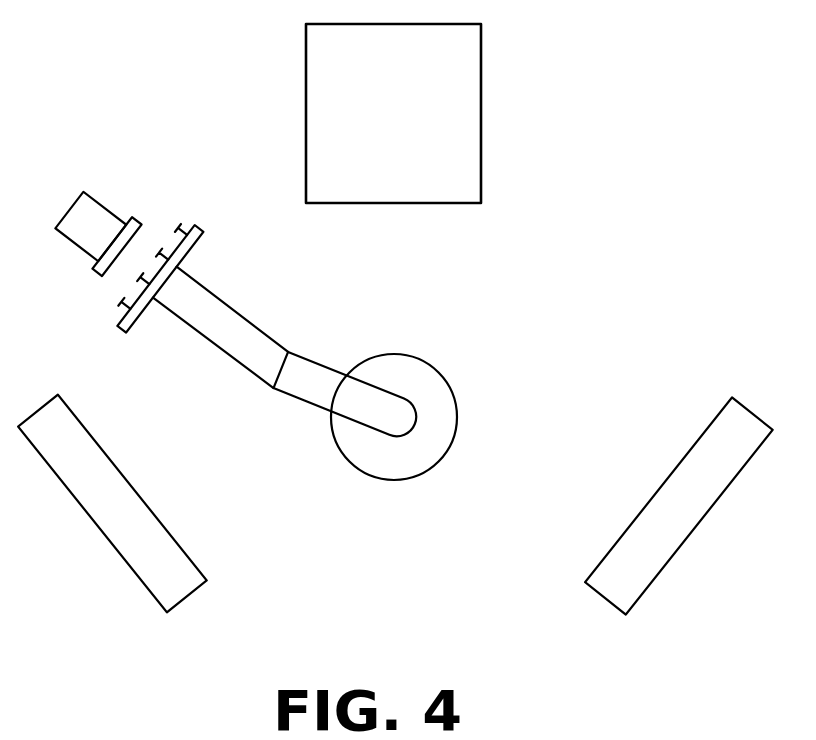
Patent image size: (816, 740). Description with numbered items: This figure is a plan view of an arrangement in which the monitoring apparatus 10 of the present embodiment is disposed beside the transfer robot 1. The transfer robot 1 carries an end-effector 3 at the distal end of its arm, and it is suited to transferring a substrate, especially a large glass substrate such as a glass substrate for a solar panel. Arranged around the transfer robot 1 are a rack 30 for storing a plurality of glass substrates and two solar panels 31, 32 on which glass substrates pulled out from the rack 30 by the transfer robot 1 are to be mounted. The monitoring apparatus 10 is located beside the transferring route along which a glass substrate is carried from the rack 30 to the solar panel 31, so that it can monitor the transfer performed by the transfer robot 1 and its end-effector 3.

The transfer robot 1 is at (266, 397).
The end-effector 3 is at (192, 248).
The monitoring apparatus 10 is at (108, 210).
The rack 30 is at (481, 112).
The solar panel 31 is at (192, 597).
The solar panel 32 is at (600, 597).